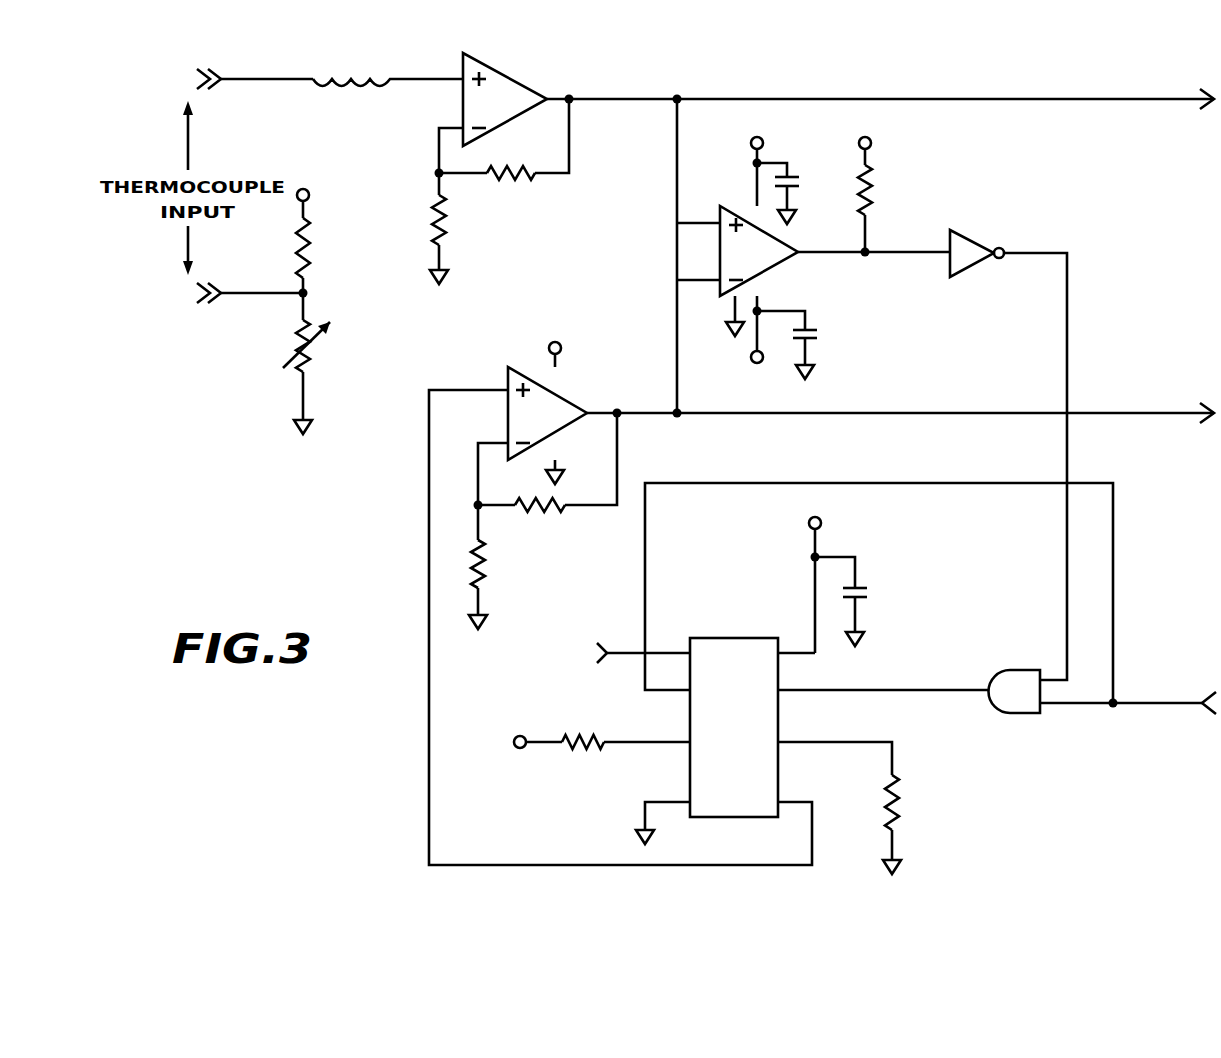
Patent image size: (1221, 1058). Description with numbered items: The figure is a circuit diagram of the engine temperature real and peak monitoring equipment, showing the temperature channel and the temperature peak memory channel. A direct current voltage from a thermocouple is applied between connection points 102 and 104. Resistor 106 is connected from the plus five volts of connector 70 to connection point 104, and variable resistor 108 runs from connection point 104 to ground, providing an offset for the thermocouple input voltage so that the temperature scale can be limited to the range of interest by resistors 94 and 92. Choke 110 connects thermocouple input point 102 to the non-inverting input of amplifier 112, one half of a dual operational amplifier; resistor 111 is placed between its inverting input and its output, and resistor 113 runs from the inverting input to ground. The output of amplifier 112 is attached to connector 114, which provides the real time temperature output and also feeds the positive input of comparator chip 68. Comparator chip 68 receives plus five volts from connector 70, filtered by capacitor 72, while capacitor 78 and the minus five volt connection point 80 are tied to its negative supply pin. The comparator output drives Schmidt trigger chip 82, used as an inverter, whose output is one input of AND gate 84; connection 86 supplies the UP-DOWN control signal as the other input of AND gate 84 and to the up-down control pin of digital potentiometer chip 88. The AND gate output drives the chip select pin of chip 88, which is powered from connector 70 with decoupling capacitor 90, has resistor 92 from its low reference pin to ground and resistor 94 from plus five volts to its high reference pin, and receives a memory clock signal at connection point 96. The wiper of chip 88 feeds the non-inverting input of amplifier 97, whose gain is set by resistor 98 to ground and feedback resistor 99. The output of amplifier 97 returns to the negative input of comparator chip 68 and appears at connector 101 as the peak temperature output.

The thermocouple input point 102 is at (196, 79).
The connection point 104 is at (196, 293).
The resistor 106 is at (310, 258).
The variable resistor 108 is at (310, 364).
The choke 110 is at (342, 82).
The resistor 111 is at (519, 180).
The amplifier 112 is at (504, 80).
The resistor 113 is at (433, 216).
The connector 114 is at (1156, 99).
The connector 70 is at (309, 195).
The filter capacitor 72 is at (803, 189).
The comparator chip 68 is at (780, 266).
The capacitor 78 is at (820, 339).
The connection point 80 is at (751, 357).
The Schmidt trigger chip 82 is at (975, 244).
The connector 101 is at (1165, 404).
The dual operational amplifier 97 is at (567, 402).
The resistor 98 is at (486, 571).
The resistor 99 is at (548, 512).
The connection point 96 is at (592, 653).
The resistor 94 is at (574, 738).
The digital potentiometer chip 88 is at (874, 663).
The decoupling capacitor 90 is at (870, 593).
The resistor 92 is at (900, 797).
The AND gate chip 84 is at (1006, 670).
The connection 86 is at (1186, 703).